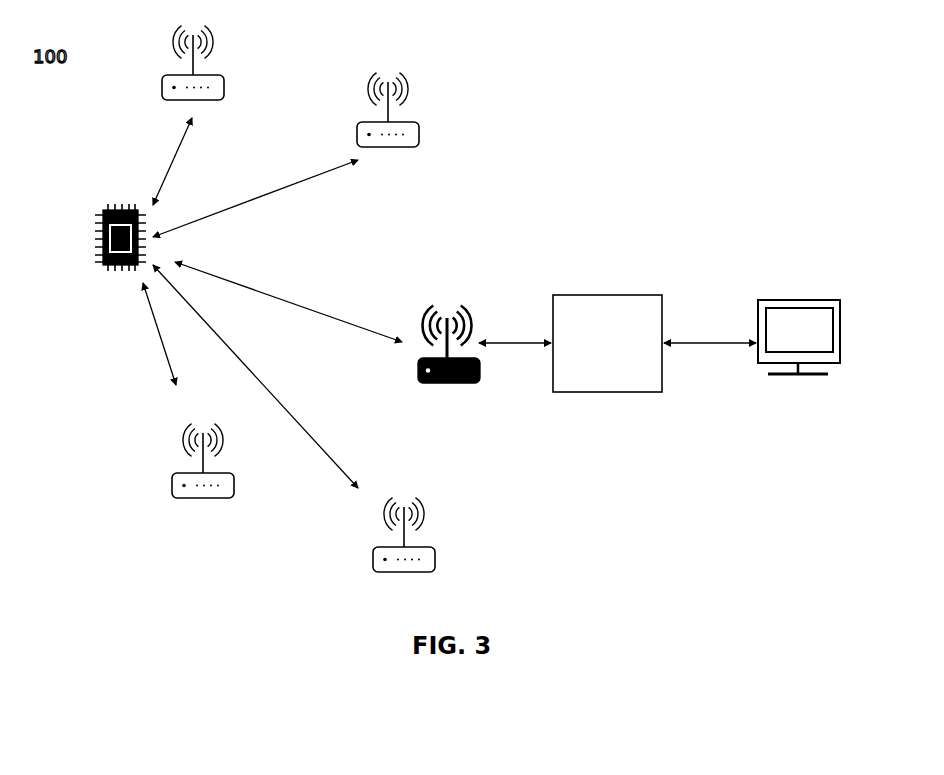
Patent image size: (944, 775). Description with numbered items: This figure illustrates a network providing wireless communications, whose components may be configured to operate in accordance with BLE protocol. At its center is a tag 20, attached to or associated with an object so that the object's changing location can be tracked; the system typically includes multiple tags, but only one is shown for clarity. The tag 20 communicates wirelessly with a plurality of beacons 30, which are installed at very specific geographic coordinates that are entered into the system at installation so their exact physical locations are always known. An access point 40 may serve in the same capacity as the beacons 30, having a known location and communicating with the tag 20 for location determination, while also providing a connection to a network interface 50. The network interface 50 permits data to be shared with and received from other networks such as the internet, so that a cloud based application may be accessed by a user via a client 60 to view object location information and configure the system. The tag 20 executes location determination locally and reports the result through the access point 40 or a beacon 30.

The tag 20 is at (116, 252).
The beacon 30 is at (308, 307).
The access point 40 is at (457, 358).
The network interface 50 is at (617, 352).
The client 60 is at (812, 346).